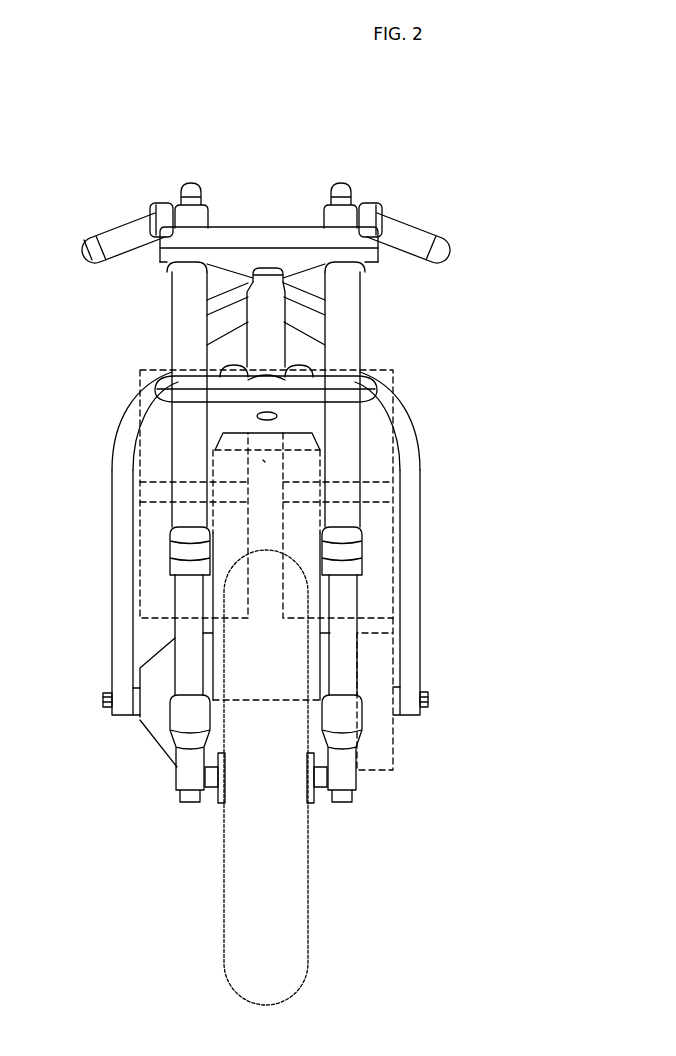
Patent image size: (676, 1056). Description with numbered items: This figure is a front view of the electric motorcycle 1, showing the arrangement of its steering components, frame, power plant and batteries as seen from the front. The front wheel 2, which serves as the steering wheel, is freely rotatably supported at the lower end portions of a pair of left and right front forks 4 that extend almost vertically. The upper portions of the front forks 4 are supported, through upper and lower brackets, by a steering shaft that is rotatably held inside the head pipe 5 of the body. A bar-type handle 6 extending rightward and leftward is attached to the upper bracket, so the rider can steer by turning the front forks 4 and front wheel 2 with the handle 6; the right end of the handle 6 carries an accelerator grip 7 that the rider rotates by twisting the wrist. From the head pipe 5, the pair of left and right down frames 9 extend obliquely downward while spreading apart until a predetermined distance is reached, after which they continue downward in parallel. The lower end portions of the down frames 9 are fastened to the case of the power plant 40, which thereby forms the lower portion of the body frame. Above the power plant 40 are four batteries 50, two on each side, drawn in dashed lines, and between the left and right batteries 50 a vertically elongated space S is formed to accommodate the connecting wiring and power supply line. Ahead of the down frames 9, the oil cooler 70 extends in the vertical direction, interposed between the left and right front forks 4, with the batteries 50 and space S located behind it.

The electric motorcycle 1 is at (488, 186).
The front wheel 2 is at (297, 903).
The front fork 4 is at (182, 516).
The head pipe 5 is at (265, 300).
The bar-type handle 6 is at (142, 213).
The accelerator grip 7 is at (104, 230).
The down frame 9 is at (116, 437).
The power plant 40 is at (153, 738).
The battery 50 is at (150, 372).
The oil cooler 70 is at (307, 465).
The space S is at (263, 460).